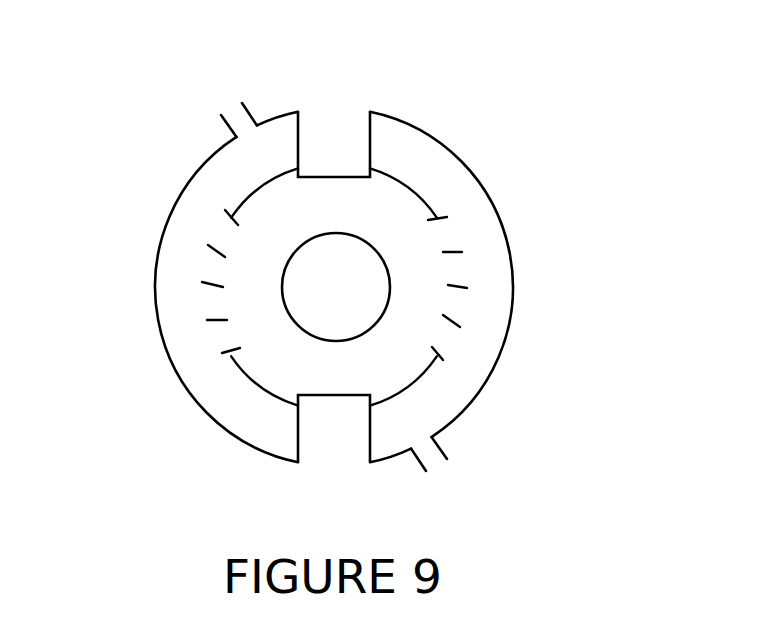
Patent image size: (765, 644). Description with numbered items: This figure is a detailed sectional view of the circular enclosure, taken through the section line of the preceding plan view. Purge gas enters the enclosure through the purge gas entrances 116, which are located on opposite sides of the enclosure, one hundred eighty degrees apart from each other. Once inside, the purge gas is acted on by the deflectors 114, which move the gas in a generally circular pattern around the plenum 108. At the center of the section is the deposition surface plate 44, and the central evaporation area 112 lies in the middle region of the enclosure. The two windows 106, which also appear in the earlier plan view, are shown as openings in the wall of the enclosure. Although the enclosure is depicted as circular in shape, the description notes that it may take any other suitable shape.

The deposition surface plate 44 is at (282, 270).
The windows 106 is at (330, 130).
The plenum 108 is at (423, 175).
The central evaporation area 112 is at (390, 352).
The deflectors 114 is at (463, 287).
The purge gas entrances 116 is at (223, 102).